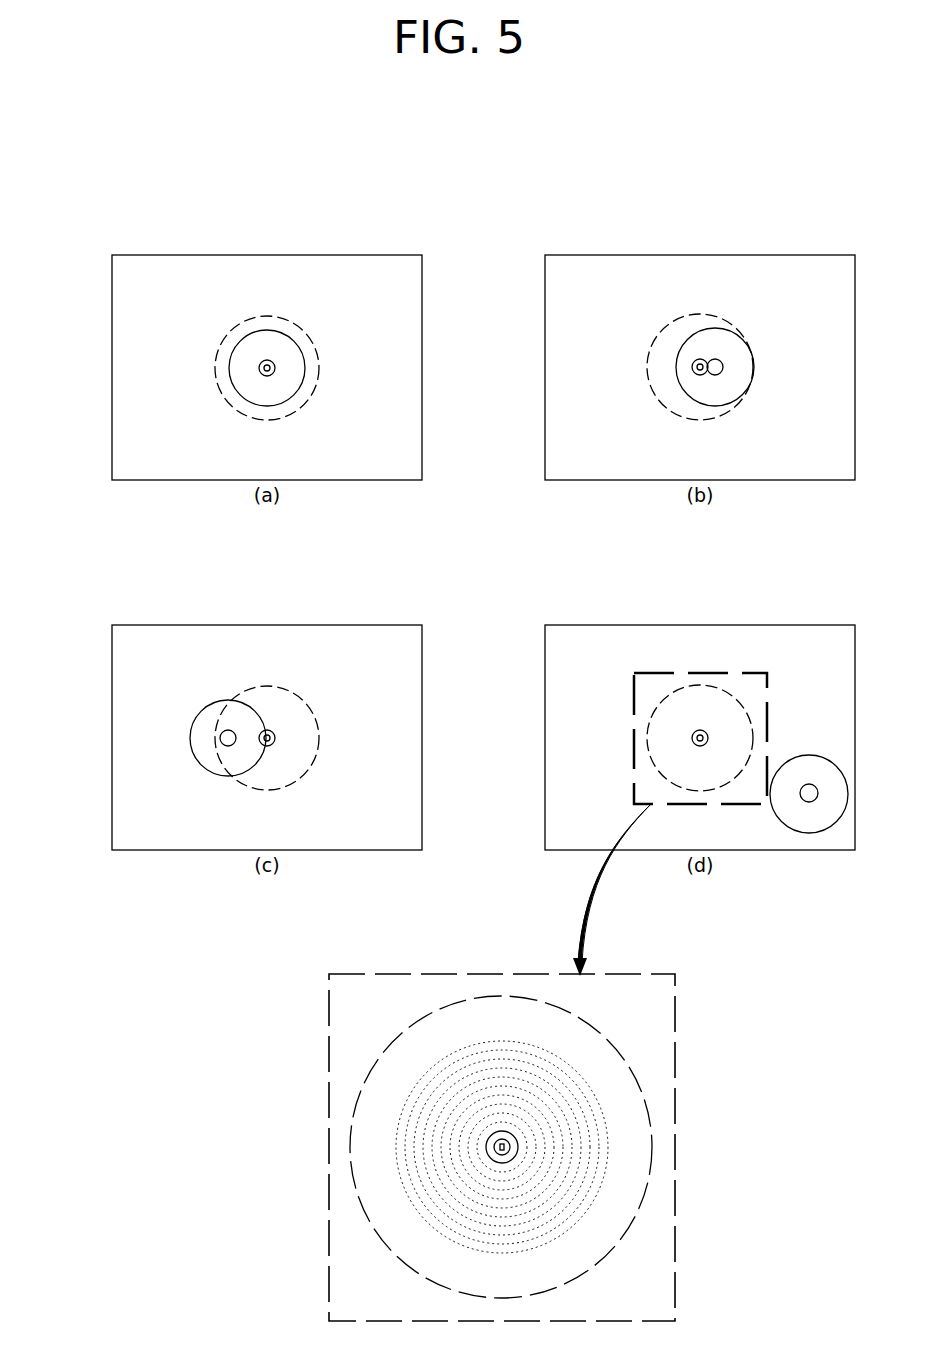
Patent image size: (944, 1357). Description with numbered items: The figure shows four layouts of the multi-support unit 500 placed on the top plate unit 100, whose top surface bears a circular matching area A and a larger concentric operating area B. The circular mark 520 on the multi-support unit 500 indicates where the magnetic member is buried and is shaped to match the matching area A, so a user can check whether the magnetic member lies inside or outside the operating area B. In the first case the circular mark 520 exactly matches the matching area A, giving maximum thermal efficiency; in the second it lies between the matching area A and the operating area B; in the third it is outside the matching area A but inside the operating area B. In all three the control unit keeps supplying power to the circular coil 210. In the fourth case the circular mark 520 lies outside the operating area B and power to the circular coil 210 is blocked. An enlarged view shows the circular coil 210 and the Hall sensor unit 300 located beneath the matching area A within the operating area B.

The top plate unit 100 is at (143, 275).
The multi-support unit 500 is at (246, 352).
The circular mark 520 is at (257, 374).
The circular coil 210 is at (537, 1119).
The Hall sensor unit 300 is at (518, 1146).
The matching area A is at (267, 360).
The operating area B is at (248, 317).